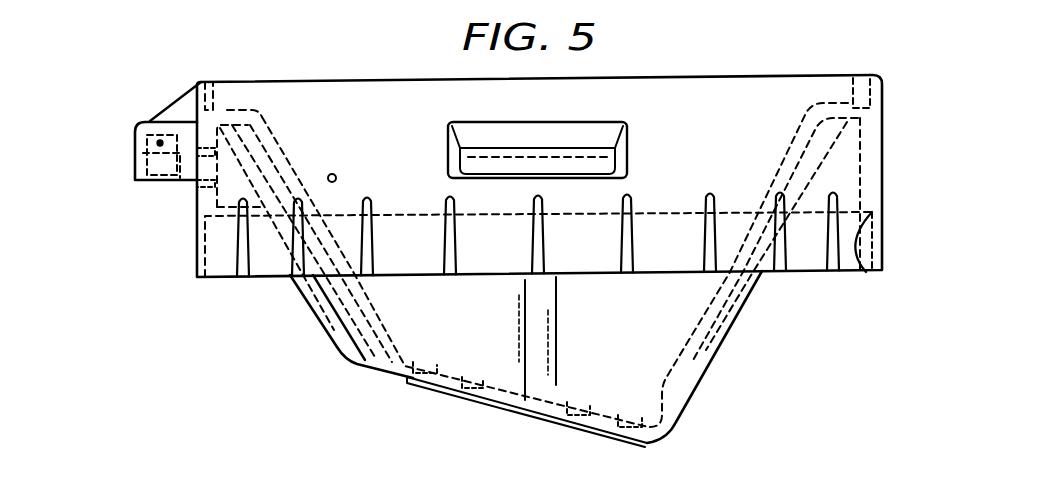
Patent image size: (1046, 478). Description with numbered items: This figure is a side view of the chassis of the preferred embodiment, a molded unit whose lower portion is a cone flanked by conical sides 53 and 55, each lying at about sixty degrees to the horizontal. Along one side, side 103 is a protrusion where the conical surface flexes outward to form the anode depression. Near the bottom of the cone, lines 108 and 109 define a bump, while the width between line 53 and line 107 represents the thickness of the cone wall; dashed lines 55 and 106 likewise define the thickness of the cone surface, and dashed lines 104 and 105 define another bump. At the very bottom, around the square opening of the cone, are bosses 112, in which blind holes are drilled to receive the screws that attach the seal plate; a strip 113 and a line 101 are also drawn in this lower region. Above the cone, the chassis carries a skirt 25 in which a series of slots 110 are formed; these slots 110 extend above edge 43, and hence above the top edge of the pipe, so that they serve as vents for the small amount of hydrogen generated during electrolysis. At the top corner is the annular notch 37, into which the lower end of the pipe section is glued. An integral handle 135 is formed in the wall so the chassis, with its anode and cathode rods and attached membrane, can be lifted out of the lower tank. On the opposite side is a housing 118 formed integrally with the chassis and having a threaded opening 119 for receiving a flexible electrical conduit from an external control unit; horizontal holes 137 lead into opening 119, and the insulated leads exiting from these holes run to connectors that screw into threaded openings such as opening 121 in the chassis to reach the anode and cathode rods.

The horizontal holes 137 is at (160, 143).
The housing 118 is at (133, 155).
The threaded opening 119 is at (162, 180).
The threaded opening 121 is at (205, 187).
The integral handle 135 is at (620, 140).
The annular notch 37 is at (870, 82).
The edge 43 is at (866, 272).
The slots 110 is at (444, 241).
The chassis skirt 25 is at (590, 252).
The conical side 53 is at (727, 338).
The line defining bump 109 is at (695, 326).
The line defining bump 108 is at (730, 284).
The line representing cone wall thickness 107 is at (740, 298).
The side protrusion 103 is at (305, 305).
The flap base 101 is at (332, 352).
The conical side 55 is at (327, 320).
The dashed line defining cone thickness 106 is at (370, 307).
The dashed line defining bump 105 is at (383, 331).
The dashed line defining bump 104 is at (409, 365).
The bosses 112 is at (465, 380).
The strip 113 is at (472, 395).